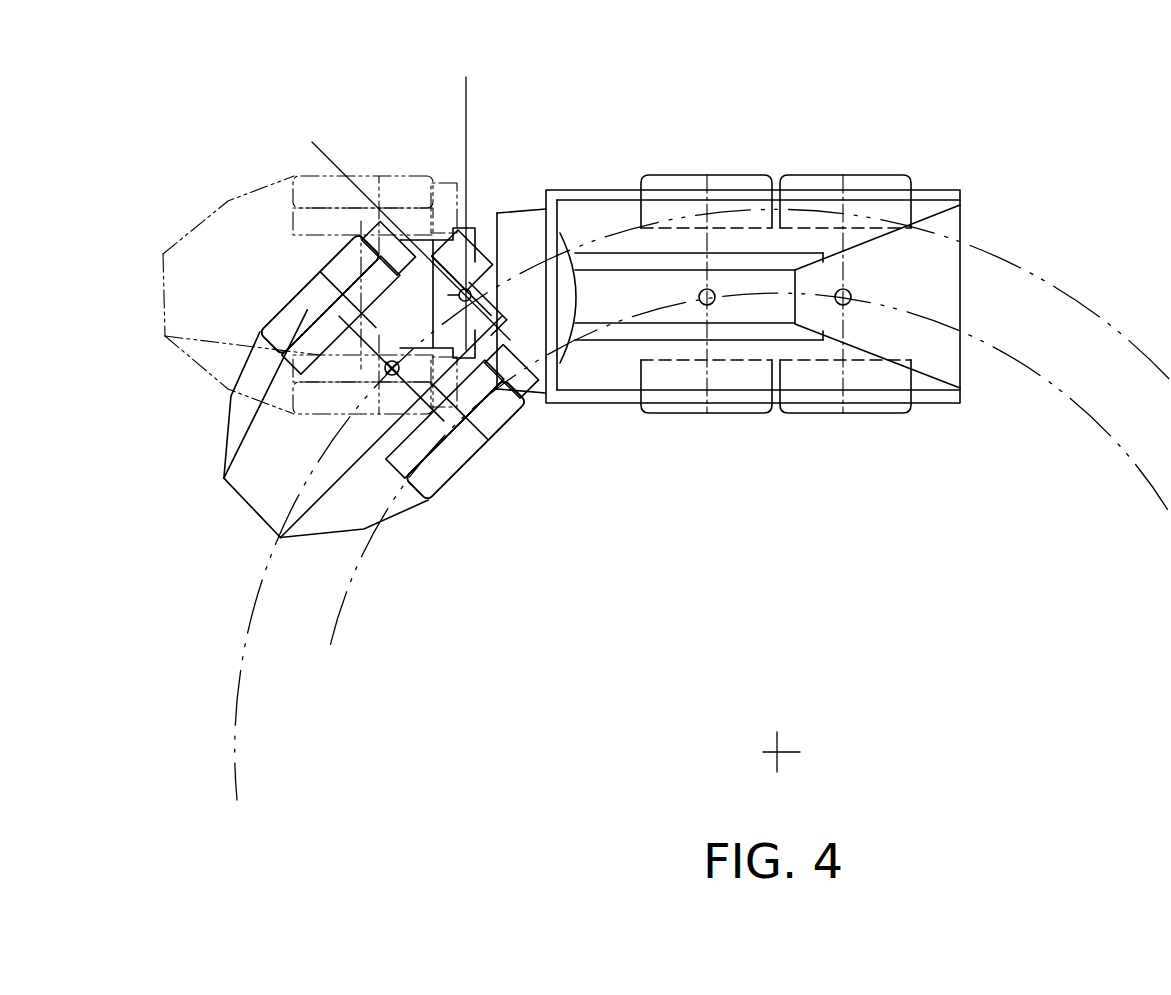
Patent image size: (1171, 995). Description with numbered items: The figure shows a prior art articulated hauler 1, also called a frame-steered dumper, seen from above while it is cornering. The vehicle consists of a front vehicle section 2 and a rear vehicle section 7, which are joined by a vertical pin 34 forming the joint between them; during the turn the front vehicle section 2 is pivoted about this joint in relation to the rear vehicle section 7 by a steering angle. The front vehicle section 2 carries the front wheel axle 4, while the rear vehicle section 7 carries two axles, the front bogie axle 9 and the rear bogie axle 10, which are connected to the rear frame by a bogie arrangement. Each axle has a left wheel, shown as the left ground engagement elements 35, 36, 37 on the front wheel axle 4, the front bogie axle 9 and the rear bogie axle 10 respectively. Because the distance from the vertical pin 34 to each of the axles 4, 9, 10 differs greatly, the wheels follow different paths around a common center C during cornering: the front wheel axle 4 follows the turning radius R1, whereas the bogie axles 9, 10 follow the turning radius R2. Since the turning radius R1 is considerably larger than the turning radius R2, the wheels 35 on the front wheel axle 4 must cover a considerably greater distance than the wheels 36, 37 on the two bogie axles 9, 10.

The articulated hauler 1 is at (745, 350).
The front vehicle section 2 is at (348, 336).
The front wheel axle 4 is at (483, 460).
The rear vehicle section 7 is at (980, 173).
The front bogie axle 9 is at (706, 177).
The rear bogie axle 10 is at (845, 178).
The vertical pin 34 is at (498, 275).
The left ground engagement element 35 is at (510, 422).
The left ground engagement element 36 is at (648, 408).
The left ground engagement element 37 is at (910, 408).
The turning radius R1 is at (777, 752).
The turning radius R2 is at (777, 752).
The bend center C is at (800, 732).